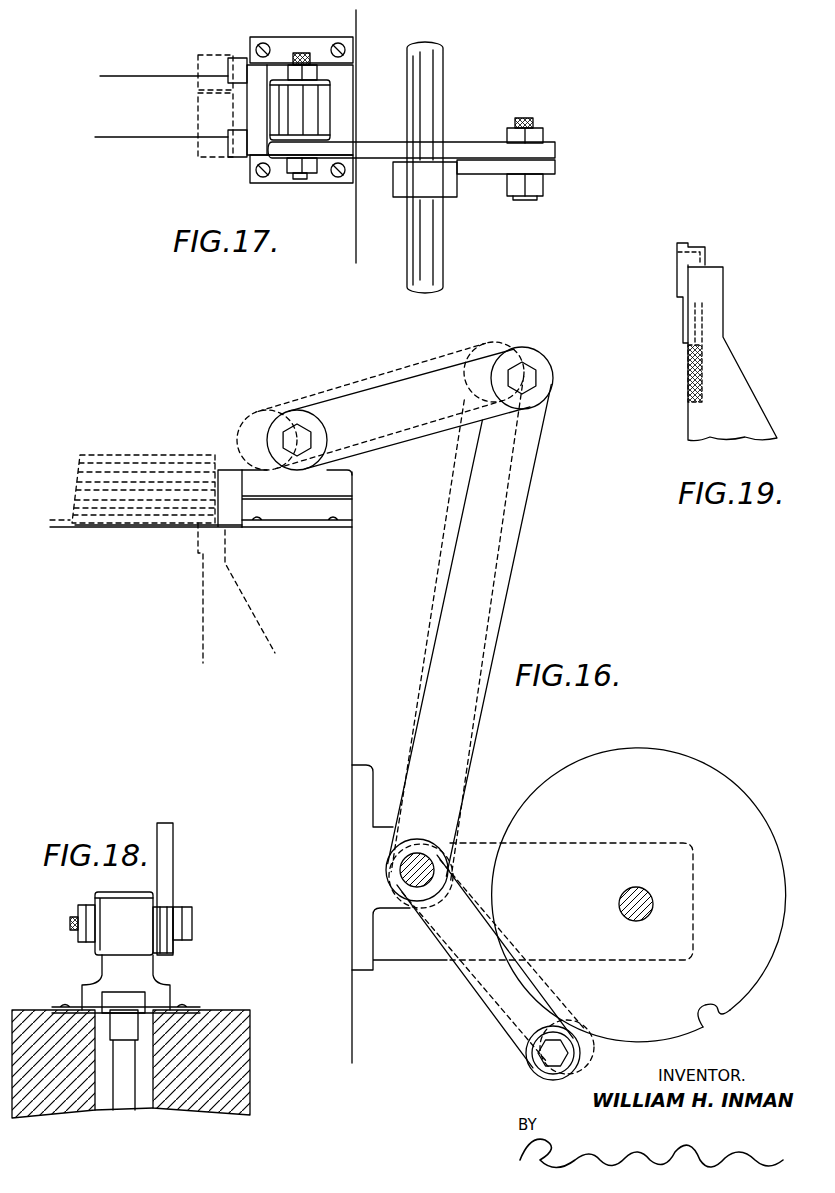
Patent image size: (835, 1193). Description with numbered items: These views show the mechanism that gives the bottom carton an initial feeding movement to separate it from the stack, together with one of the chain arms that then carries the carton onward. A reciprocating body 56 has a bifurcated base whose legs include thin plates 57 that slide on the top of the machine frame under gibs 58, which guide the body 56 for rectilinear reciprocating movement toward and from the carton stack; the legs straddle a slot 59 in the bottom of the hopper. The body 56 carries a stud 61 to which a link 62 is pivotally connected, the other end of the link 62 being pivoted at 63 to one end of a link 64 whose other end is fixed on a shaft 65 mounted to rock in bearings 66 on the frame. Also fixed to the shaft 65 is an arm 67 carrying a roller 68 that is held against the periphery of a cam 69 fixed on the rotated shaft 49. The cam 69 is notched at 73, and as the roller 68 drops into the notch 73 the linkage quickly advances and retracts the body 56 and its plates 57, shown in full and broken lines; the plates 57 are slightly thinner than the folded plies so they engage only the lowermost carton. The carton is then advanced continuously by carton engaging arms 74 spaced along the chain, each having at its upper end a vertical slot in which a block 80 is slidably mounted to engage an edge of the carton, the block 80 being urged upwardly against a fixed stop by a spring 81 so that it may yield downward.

In FIG. 16, the shaft 49 is at (619, 908).
In FIG. 17, the reciprocating body 56 is at (318, 112).
In FIG. 16, the reciprocating body 56 is at (335, 490).
In FIG. 18, the reciprocating body 56 is at (110, 947).
In FIG. 17, the thin plates 57 is at (236, 160).
In FIG. 16, the thin plates 57 is at (233, 530).
In FIG. 18, the thin plates 57 is at (84, 993).
In FIG. 17, the gibs 58 is at (282, 38).
In FIG. 16, the gibs 58 is at (305, 528).
In FIG. 18, the gibs 58 is at (190, 1005).
In FIG. 18, the slot 59 is at (97, 1108).
In FIG. 17, the stud 61 is at (300, 176).
In FIG. 16, the stud 61 is at (298, 428).
In FIG. 18, the stud 61 is at (192, 923).
In FIG. 17, the link 62 is at (462, 152).
In FIG. 16, the link 62 is at (392, 398).
In FIG. 18, the link 62 is at (176, 850).
In FIG. 17, the pivot 63 is at (540, 188).
In FIG. 16, the pivot 63 is at (537, 378).
In FIG. 17, the link 64 is at (472, 177).
In FIG. 16, the link 64 is at (527, 483).
In FIG. 17, the shaft 65 is at (445, 255).
In FIG. 16, the shaft 65 is at (415, 855).
In FIG. 16, the bearings 66 is at (388, 905).
In FIG. 16, the arm 67 is at (486, 1025).
In FIG. 16, the roller 68 is at (528, 1060).
In FIG. 16, the cam 69 is at (560, 773).
In FIG. 16, the notch 73 is at (714, 985).
In FIG. 17, the carton engaging arms 74 is at (198, 104).
In FIG. 16, the carton engaging arms 74 is at (213, 593).
In FIG. 18, the carton engaging arms 74 is at (127, 1010).
In FIG. 19, the carton engaging arms 74 is at (717, 305).
In FIG. 19, the block 80 is at (677, 257).
In FIG. 19, the spring 81 is at (702, 362).